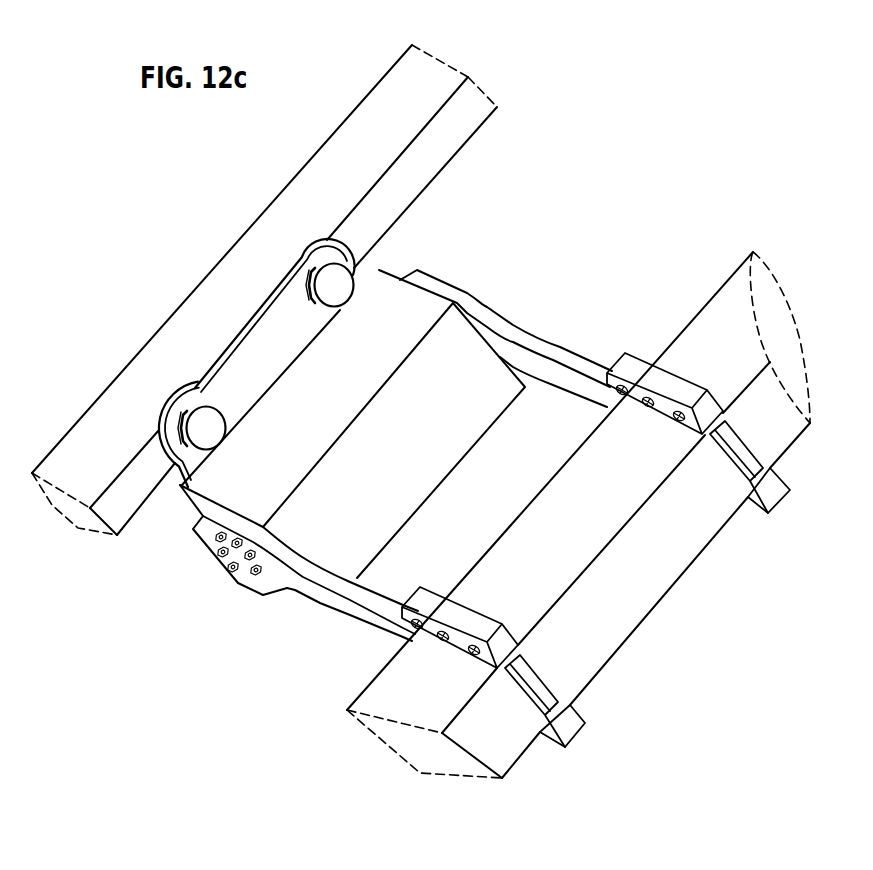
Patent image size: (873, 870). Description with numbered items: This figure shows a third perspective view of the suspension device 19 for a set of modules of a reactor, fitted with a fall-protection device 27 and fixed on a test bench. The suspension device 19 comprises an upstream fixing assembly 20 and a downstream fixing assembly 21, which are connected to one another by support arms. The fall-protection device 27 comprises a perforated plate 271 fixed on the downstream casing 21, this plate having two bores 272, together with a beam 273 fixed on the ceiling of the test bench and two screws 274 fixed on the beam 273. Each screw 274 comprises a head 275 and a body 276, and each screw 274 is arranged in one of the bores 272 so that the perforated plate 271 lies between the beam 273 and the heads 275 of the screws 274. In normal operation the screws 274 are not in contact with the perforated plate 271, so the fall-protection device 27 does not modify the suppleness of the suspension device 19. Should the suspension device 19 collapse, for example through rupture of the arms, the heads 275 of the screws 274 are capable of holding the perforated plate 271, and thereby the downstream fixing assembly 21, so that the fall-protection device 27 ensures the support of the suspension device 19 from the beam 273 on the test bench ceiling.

The suspension device 19 is at (653, 322).
The upstream fixing assembly 20 is at (657, 569).
The downstream fixing assembly 21 is at (448, 440).
The fall-protection device 27 is at (133, 497).
The perforated plate 271 is at (268, 350).
The bore 272 is at (314, 268).
The beam 273 is at (355, 157).
The screw 274 is at (310, 287).
The head 275 is at (334, 285).
The body 276 is at (319, 263).